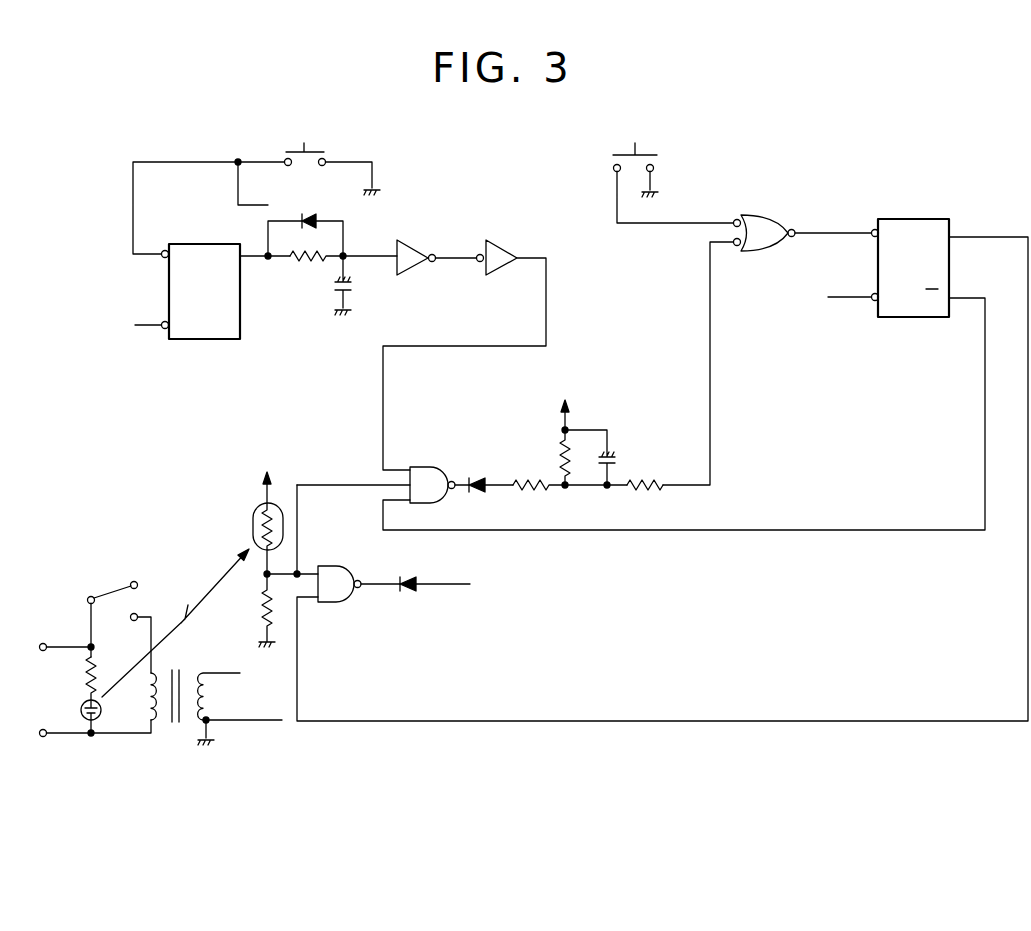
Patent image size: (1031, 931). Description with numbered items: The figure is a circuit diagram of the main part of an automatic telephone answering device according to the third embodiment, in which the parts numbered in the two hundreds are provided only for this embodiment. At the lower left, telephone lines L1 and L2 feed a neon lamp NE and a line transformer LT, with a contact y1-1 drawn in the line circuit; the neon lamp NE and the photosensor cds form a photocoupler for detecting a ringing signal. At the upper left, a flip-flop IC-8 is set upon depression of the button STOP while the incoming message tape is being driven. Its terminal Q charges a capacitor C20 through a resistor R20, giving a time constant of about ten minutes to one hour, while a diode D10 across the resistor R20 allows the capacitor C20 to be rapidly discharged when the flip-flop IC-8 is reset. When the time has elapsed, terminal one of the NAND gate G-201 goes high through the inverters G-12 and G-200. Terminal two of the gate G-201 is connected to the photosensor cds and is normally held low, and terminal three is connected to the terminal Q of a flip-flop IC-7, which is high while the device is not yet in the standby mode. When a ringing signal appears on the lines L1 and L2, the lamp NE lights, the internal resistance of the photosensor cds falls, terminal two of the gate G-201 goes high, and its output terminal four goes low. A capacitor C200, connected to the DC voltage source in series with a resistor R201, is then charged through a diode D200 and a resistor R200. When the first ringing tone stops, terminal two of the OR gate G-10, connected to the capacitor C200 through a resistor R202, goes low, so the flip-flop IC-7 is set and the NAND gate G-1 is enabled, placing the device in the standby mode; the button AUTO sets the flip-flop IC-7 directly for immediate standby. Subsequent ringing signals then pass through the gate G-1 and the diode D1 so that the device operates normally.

The flip-flop IC-8 is at (211, 250).
The button STOP is at (331, 156).
The diode D10 is at (305, 221).
The resistor R20 is at (331, 270).
The capacitor C20 is at (366, 285).
The inverter G-12 is at (434, 245).
The inverter G-200 is at (466, 342).
The button AUTO is at (671, 173).
The OR gate G-10 is at (767, 338).
The flip-flop IC-7 is at (662, 470).
The NAND gate G-201 is at (383, 482).
The diode D200 is at (498, 475).
The resistor R200 is at (567, 501).
The resistor R201 is at (539, 432).
The capacitor C200 is at (618, 457).
The resistor R202 is at (653, 501).
The photosensor cds is at (192, 573).
The NAND gate G-1 is at (329, 566).
The diode D1 is at (430, 572).
The relay contact y1-1 is at (118, 615).
The telephone line L1 is at (60, 635).
The telephone line L2 is at (89, 721).
The neon lamp NE is at (105, 695).
The transformer LT is at (216, 695).